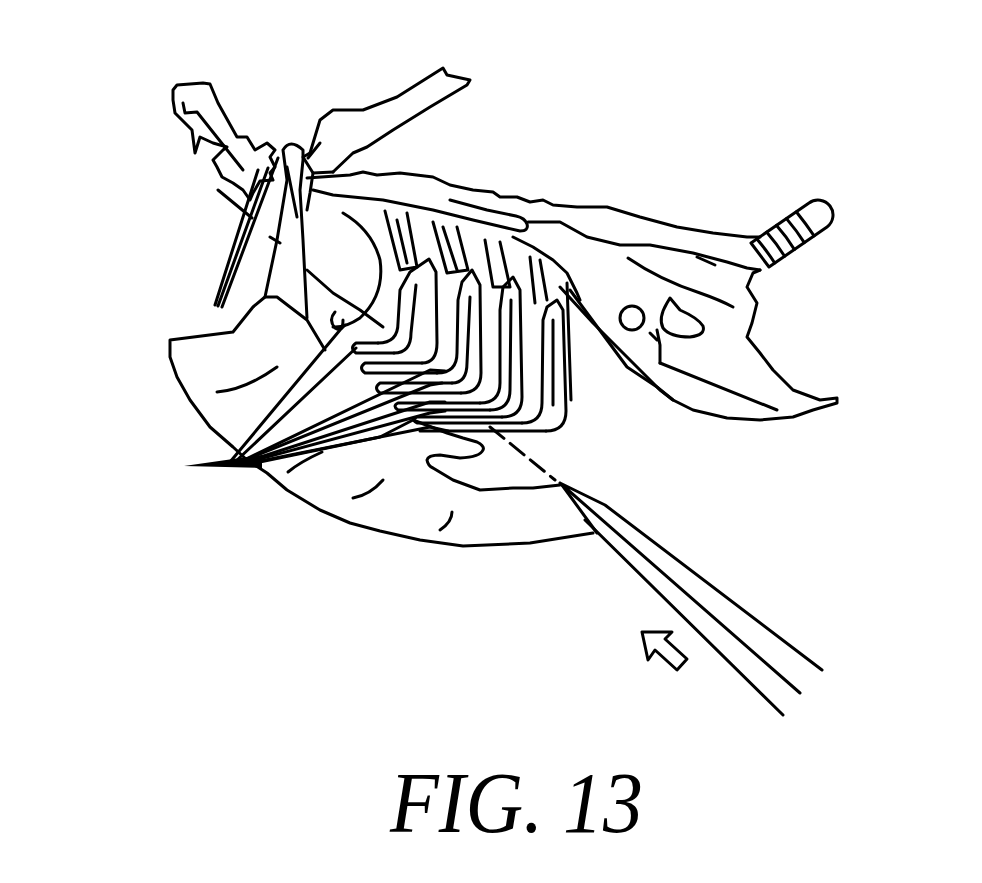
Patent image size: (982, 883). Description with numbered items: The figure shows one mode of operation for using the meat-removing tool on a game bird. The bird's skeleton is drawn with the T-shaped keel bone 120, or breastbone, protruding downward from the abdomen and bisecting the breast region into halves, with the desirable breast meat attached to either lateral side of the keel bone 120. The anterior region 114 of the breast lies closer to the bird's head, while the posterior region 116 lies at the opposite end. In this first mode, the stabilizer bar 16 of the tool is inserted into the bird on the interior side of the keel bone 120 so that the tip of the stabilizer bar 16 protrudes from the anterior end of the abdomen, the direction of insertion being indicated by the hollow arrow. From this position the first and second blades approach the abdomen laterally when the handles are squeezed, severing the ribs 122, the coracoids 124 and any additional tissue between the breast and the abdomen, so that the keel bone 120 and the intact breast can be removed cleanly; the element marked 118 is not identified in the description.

The stabilizer bar 16 is at (700, 585).
The anterior region 114 is at (140, 409).
The posterior region 116 is at (590, 548).
The vertebra 118 is at (237, 131).
The keel bone 120 is at (322, 483).
The ribs 122 is at (205, 462).
The coracoids 124 is at (313, 270).